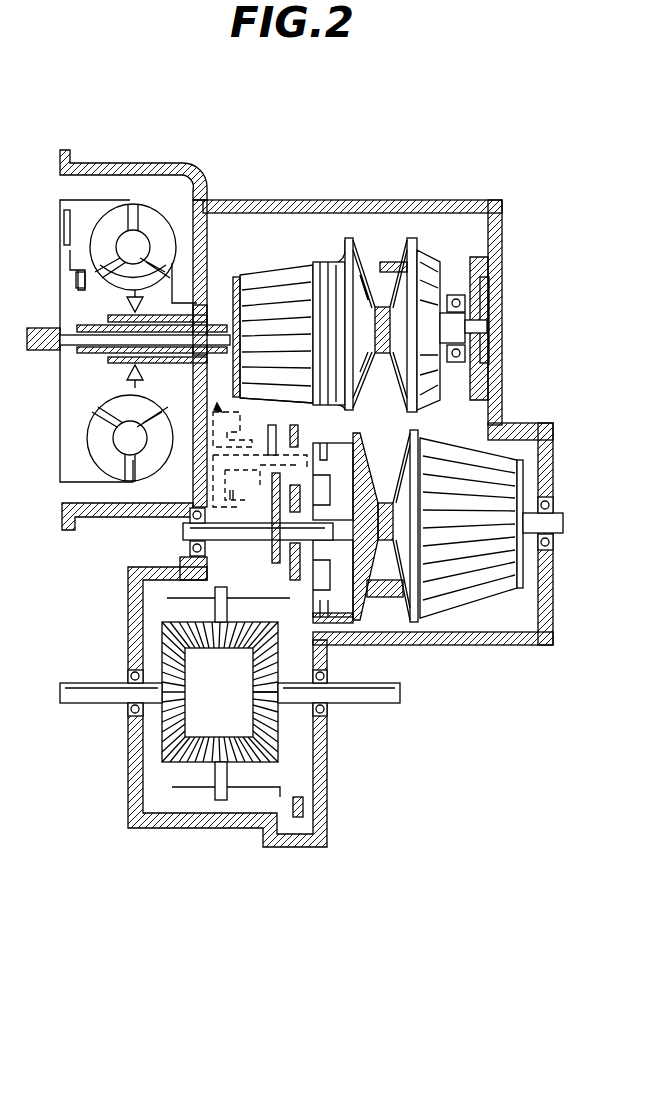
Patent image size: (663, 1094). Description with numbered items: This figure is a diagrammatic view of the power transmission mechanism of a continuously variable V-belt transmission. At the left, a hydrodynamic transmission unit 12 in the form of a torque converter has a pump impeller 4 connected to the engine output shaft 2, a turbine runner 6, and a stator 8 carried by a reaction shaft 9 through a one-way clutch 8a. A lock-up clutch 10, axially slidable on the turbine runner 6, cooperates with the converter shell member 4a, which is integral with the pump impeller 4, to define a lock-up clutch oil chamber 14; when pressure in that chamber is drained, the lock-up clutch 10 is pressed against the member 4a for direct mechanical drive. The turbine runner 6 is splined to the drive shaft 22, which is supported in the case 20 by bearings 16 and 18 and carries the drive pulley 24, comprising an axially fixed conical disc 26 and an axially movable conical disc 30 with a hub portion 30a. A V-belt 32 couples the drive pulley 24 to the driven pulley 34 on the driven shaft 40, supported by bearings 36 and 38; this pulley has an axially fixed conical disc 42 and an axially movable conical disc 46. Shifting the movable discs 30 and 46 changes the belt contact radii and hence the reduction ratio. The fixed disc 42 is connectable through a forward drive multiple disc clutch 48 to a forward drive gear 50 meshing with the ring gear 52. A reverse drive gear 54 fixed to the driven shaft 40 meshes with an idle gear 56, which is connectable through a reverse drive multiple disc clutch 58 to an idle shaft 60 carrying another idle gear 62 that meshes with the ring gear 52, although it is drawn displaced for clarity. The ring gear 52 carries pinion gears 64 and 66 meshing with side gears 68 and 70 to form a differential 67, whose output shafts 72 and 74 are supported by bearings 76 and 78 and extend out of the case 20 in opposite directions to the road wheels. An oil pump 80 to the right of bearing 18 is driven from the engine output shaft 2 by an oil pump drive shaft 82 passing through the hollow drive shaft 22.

The engine output shaft 2 is at (42, 328).
The pump impeller 4 is at (150, 210).
The member (converter shell) 4a is at (60, 425).
The turbine runner 6 is at (93, 230).
The stator 8 is at (150, 278).
The one-way clutch 8a is at (127, 300).
The reaction shaft 9 is at (135, 370).
The lock-up clutch 10 is at (60, 235).
The hydrodynamic transmission unit (torque converter) 12 is at (52, 475).
The lock-up clutch oil chamber 14 is at (65, 263).
The bearing 16 is at (205, 320).
The bearing 18 is at (455, 295).
The case 20 is at (502, 210).
The drive shaft 22 is at (298, 362).
The drive pulley 24 is at (412, 238).
The axially fixed conical disc 26 is at (425, 255).
The axially movable conical disc 30 is at (347, 238).
The hub portion 30a is at (320, 265).
The V-belt 32 is at (381, 262).
The driven pulley 34 is at (397, 610).
The bearing 36 is at (190, 532).
The bearing 38 is at (553, 505).
The driven shaft 40 is at (322, 515).
The axially fixed conical disc 42 is at (343, 618).
The axially movable conical disc 46 is at (420, 432).
The forward drive multiple disc clutch 48 is at (333, 590).
The forward drive gear 50 is at (290, 560).
The ring gear 52 is at (317, 626).
The reverse drive gear 54 is at (270, 545).
The idle gear 56 is at (222, 405).
The reverse drive multiple disc clutch 58 is at (252, 392).
The idle shaft 60 is at (246, 489).
The idle gear 62 is at (293, 445).
The pinion gear 64 is at (245, 625).
The pinion gear 66 is at (270, 760).
The differential 67 is at (197, 775).
The side gear 68 is at (180, 665).
The side gear 70 is at (245, 700).
The output shaft 72 is at (92, 705).
The output shaft 74 is at (382, 705).
The bearing 76 is at (128, 678).
The bearing 78 is at (330, 705).
The oil pump 80 is at (502, 270).
The oil pump drive shaft 82 is at (77, 340).